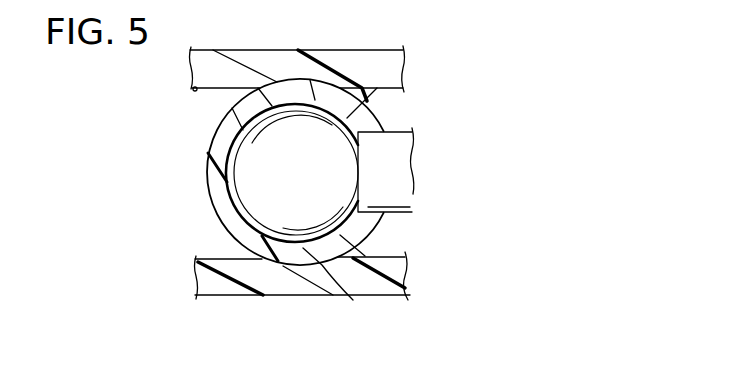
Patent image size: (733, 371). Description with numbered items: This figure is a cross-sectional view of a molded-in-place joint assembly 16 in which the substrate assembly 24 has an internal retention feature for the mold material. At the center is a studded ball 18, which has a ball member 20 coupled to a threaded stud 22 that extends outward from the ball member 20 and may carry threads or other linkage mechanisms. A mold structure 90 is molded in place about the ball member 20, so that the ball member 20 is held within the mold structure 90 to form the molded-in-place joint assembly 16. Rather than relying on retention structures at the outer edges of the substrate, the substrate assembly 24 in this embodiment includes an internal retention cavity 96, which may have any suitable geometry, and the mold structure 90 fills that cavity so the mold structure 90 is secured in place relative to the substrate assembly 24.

The molded-in-place joint assembly 16 is at (456, 96).
The studded ball 18 is at (304, 176).
The ball member 20 is at (310, 183).
The threaded stud 22 is at (398, 172).
The substrate assembly 24 is at (360, 48).
The mold structure 90 is at (207, 168).
The internal retention cavity 96 is at (290, 77).